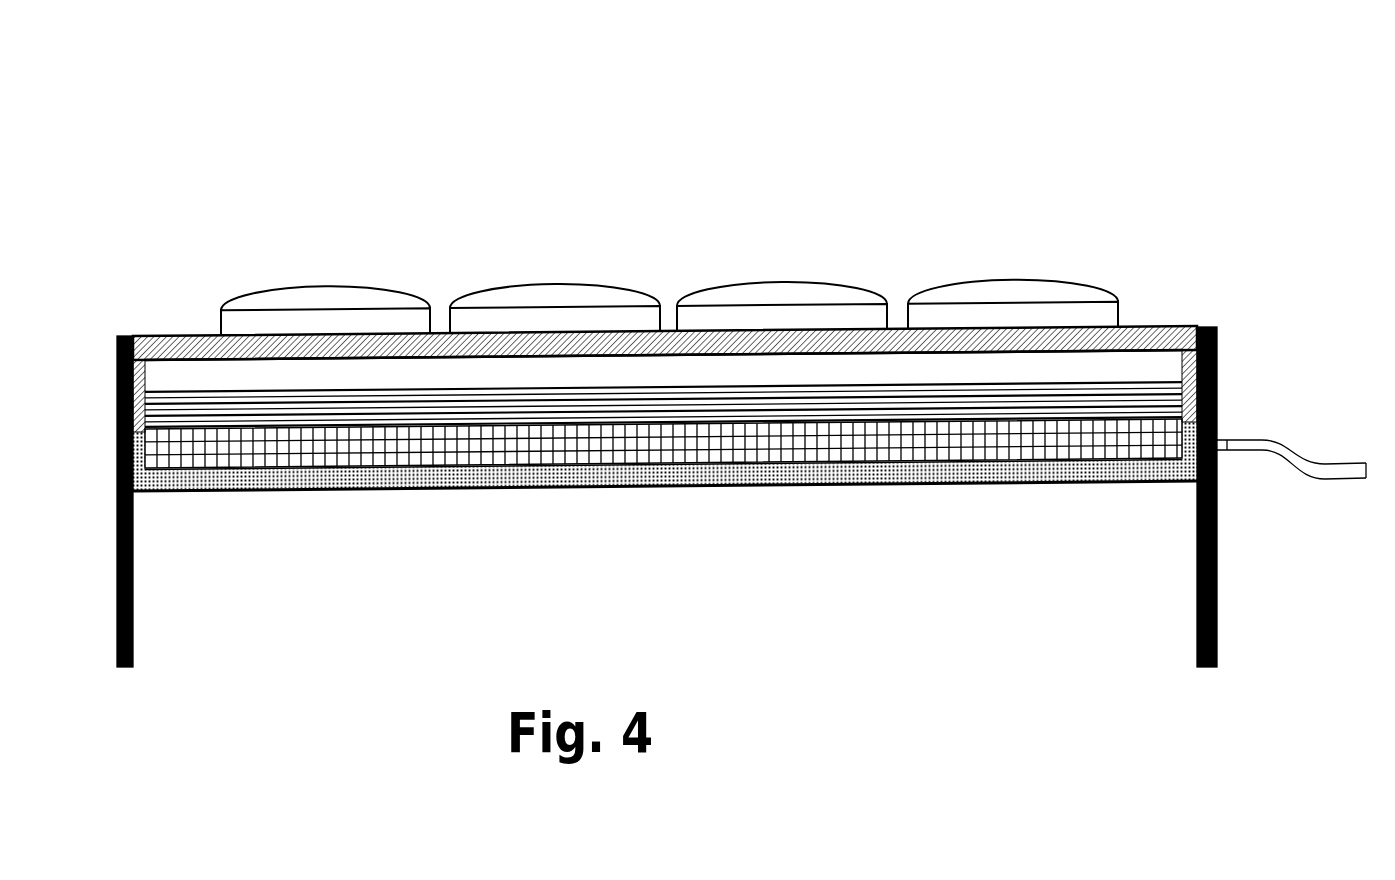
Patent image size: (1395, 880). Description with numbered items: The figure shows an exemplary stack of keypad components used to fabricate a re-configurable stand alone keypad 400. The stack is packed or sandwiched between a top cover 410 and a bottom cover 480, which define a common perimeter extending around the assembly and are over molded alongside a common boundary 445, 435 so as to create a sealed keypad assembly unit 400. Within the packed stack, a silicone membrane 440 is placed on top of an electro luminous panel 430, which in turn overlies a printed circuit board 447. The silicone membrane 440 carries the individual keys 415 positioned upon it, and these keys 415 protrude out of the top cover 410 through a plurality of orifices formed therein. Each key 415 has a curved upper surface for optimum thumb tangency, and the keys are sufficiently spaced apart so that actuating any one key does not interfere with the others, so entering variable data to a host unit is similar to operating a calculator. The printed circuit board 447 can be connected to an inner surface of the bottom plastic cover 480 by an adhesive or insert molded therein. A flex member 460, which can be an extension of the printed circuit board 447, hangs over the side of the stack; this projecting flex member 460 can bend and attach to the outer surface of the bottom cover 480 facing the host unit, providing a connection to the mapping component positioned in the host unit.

The stand alone keypad 400 is at (1049, 98).
The top cover 410 is at (152, 336).
The keys 415 is at (948, 283).
The electro luminous panel 430 is at (1008, 408).
The common boundary 435 is at (1215, 408).
The silicone membrane 440 is at (1143, 375).
The common boundary 445 is at (118, 424).
The printed circuit board 447 is at (852, 447).
The flex member 460 is at (1333, 483).
The bottom cover 480 is at (1180, 483).